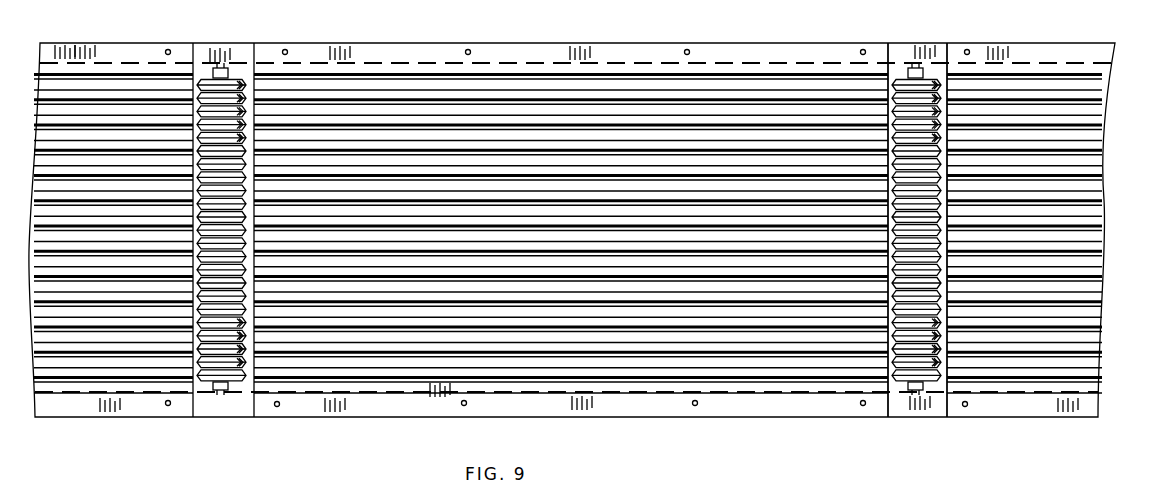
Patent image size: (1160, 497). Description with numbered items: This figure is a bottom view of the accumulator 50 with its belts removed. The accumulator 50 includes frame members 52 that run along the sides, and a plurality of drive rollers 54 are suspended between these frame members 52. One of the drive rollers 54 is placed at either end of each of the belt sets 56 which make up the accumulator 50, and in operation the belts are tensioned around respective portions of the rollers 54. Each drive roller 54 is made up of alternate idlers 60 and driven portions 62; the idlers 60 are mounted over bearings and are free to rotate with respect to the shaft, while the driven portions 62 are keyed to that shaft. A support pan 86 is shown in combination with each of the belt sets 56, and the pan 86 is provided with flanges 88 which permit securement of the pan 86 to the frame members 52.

The accumulator 50 is at (275, 457).
The frame members 52 is at (745, 410).
The drive rollers 54 is at (895, 388).
The belt sets 56 is at (392, 368).
The idlers 60 is at (208, 386).
The driven portions 62 is at (238, 386).
The support pan 86 is at (640, 366).
The flanges 88 is at (424, 48).